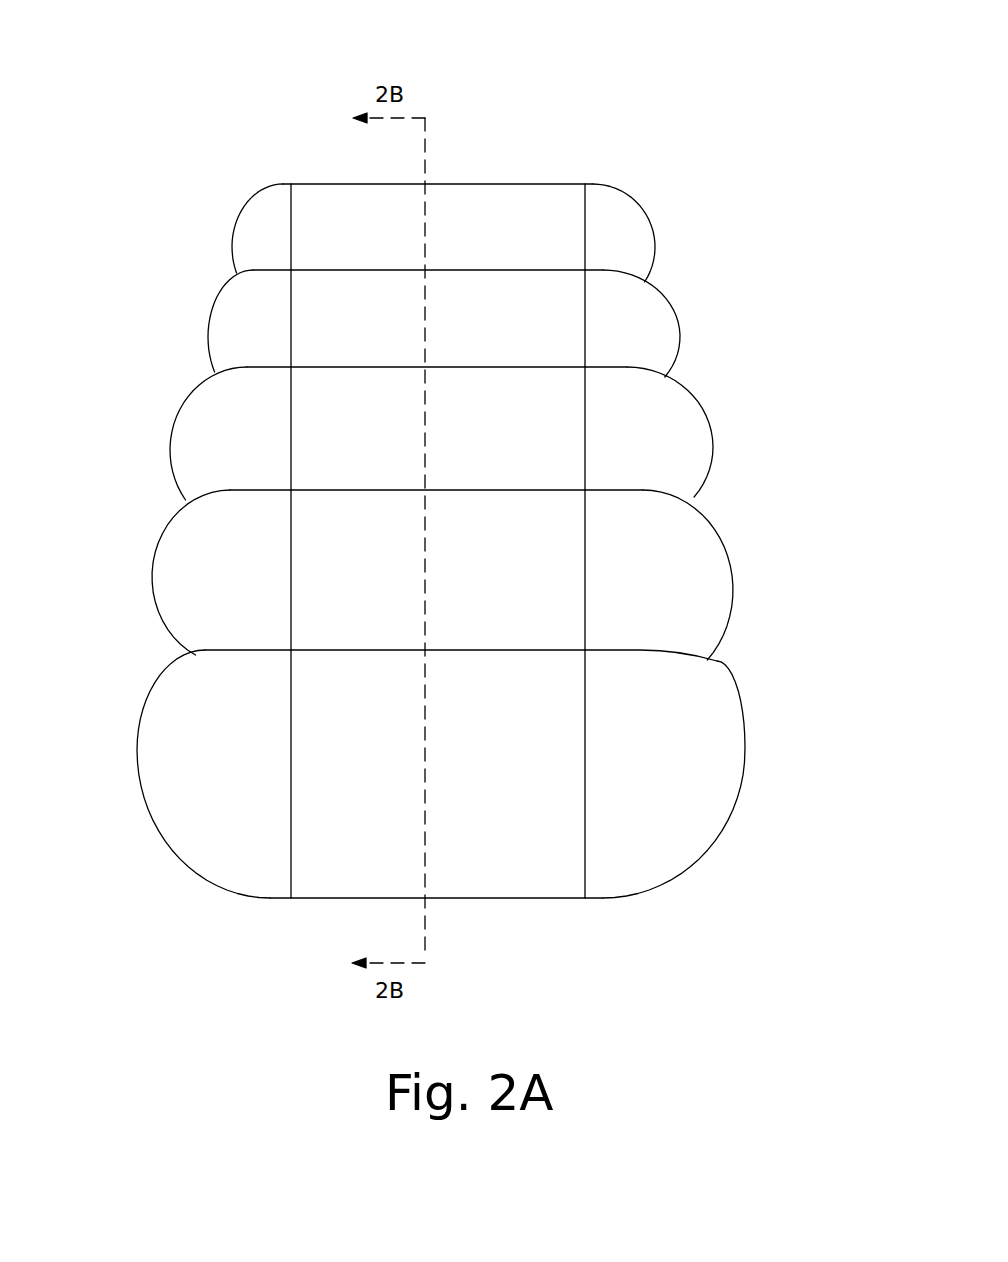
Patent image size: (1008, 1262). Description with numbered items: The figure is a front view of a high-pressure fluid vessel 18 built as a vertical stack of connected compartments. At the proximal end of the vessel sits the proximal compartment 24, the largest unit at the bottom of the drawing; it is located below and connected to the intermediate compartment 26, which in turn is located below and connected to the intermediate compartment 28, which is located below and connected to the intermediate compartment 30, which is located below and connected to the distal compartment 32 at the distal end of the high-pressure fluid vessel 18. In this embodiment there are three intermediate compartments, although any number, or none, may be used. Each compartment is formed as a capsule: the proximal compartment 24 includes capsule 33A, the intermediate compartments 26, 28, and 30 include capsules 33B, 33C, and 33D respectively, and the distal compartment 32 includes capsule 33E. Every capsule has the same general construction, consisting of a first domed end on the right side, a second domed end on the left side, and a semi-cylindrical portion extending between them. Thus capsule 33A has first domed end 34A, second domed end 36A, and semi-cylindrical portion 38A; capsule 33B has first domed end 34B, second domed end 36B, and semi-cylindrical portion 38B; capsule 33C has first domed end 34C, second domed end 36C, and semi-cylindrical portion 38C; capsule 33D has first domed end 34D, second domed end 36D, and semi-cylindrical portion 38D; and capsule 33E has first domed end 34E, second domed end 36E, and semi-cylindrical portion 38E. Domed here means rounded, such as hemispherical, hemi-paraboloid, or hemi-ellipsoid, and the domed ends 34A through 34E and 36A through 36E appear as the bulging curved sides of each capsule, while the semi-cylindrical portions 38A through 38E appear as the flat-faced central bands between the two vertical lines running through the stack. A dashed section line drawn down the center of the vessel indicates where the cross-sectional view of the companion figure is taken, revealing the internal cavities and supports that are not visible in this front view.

The high-pressure fluid vessel 18 is at (142, 78).
The proximal compartment 24 is at (770, 738).
The intermediate compartment 26 is at (752, 572).
The intermediate compartment 28 is at (723, 413).
The intermediate compartment 30 is at (688, 297).
The distal compartment 32 is at (657, 205).
The capsule 33A is at (710, 698).
The capsule 33B is at (700, 557).
The capsule 33C is at (657, 410).
The capsule 33D is at (648, 300).
The capsule 33E is at (537, 207).
The first domed end 34A is at (723, 827).
The first domed end 34B is at (735, 597).
The first domed end 34C is at (713, 447).
The first domed end 34D is at (683, 338).
The first domed end 34E is at (620, 187).
The second domed end 36A is at (140, 790).
The second domed end 36B is at (155, 581).
The second domed end 36C is at (170, 470).
The second domed end 36D is at (210, 323).
The second domed end 36E is at (235, 230).
The semi-cylindrical portion 38A is at (497, 858).
The semi-cylindrical portion 38B is at (325, 597).
The semi-cylindrical portion 38C is at (345, 440).
The semi-cylindrical portion 38D is at (345, 315).
The semi-cylindrical portion 38E is at (447, 205).